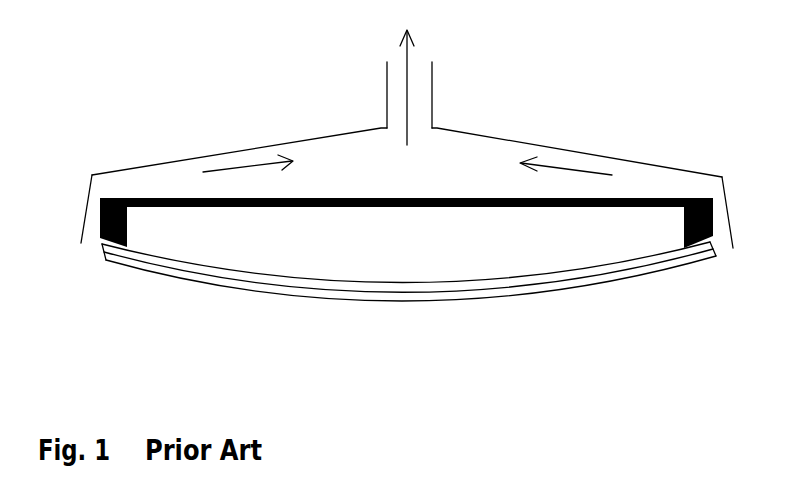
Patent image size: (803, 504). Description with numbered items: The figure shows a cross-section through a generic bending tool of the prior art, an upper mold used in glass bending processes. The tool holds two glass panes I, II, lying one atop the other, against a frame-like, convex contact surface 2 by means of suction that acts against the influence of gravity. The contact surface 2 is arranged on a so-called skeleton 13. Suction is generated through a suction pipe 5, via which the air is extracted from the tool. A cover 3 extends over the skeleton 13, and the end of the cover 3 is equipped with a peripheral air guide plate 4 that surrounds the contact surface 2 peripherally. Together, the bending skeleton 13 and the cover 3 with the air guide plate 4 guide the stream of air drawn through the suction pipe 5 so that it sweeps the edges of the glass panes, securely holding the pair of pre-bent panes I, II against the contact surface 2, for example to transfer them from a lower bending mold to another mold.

The contact surface 2 is at (101, 239).
The cover 3 is at (211, 153).
The air guide plate 4 is at (82, 203).
The suction pipe 5 is at (389, 85).
The skeleton 13 is at (442, 197).
The glass pane I is at (183, 268).
The glass pane II is at (205, 283).